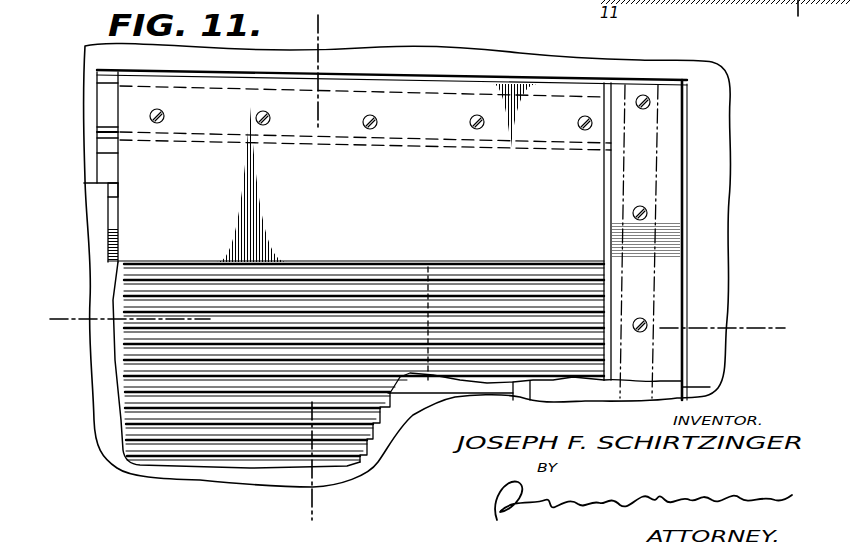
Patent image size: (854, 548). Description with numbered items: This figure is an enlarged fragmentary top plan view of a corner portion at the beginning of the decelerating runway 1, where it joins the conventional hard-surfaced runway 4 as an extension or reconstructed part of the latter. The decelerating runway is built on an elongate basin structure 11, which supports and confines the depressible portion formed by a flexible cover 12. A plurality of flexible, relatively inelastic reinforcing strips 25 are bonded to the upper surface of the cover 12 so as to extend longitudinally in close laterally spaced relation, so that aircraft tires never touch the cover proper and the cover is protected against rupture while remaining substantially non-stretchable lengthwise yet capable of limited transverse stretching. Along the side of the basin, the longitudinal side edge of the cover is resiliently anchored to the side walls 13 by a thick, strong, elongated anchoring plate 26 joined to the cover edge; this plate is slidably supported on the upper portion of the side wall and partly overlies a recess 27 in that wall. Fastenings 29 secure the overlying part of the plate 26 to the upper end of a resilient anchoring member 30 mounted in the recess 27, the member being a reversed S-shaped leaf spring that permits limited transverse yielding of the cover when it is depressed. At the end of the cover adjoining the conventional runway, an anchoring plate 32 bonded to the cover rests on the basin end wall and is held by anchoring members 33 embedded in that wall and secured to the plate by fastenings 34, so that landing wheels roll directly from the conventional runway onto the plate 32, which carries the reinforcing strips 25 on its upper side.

The decelerating runway 1 is at (633, 190).
The conventional hard-surfaced runway 4 is at (714, 112).
The basin structure 11 is at (391, 437).
The flexible cover 12 is at (61, 331).
The side walls 13 is at (301, 25).
The reinforcing strips 25 is at (128, 365).
The anchoring plates 26 is at (553, 89).
The recesses 27 is at (93, 84).
The fastenings 29 is at (470, 121).
The resilient anchoring members 30 is at (108, 112).
The anchoring plate 32 is at (664, 280).
The anchoring members 33 is at (646, 391).
The fastenings 34 is at (646, 98).